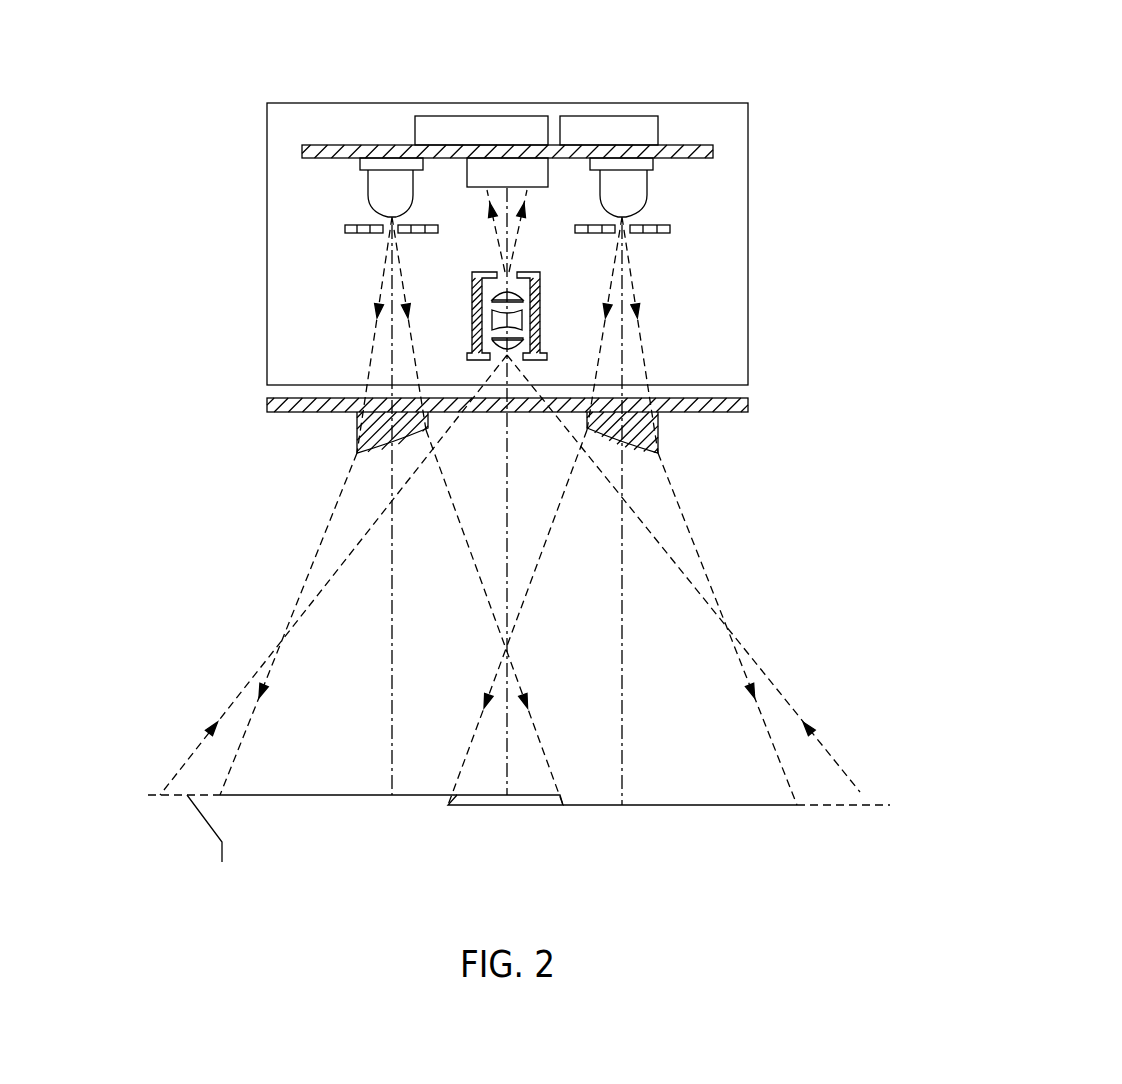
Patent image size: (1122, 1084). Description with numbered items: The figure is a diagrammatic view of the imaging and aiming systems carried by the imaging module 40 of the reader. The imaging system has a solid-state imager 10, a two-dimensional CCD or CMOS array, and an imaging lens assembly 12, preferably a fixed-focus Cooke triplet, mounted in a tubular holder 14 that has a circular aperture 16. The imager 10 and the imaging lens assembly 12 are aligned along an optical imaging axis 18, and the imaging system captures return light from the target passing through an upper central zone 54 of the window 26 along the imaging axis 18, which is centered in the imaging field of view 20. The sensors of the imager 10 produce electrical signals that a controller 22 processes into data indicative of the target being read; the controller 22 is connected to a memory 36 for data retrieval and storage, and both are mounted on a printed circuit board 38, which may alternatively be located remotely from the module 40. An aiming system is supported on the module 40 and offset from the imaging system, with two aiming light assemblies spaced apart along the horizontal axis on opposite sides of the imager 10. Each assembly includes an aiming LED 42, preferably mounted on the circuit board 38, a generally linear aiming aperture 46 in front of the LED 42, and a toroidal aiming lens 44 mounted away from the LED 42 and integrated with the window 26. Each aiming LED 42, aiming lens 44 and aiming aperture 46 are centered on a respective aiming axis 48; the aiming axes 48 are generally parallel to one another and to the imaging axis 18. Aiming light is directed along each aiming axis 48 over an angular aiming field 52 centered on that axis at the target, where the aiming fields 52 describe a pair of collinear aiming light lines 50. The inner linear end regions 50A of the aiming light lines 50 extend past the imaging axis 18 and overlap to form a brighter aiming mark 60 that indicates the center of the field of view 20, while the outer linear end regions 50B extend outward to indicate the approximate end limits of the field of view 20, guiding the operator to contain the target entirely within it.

The imaging module 40 is at (743, 45).
The printed circuit board 38 is at (712, 152).
The controller 22 is at (415, 134).
The memory 36 is at (659, 128).
The solid-state imager 10 is at (468, 175).
The aiming light emitting diode 42 is at (867, 178).
The aiming aperture 46 is at (847, 336).
The imaging lens assembly 12 is at (666, 275).
The tubular holder 14 is at (472, 290).
The circular aperture 16 is at (543, 307).
The optical imaging axis 18 is at (507, 468).
The window 26 is at (267, 405).
The upper central zone 54 is at (520, 413).
The toroidal aiming lens 44 is at (683, 436).
The angular aiming field 52 is at (705, 525).
The aiming axis 48 is at (392, 600).
The imaging field of view 20 is at (266, 655).
The aiming light line 50 is at (697, 805).
The inner linear end region 50A is at (477, 794).
The outer linear end region 50B is at (343, 797).
The aiming mark 60 is at (562, 820).